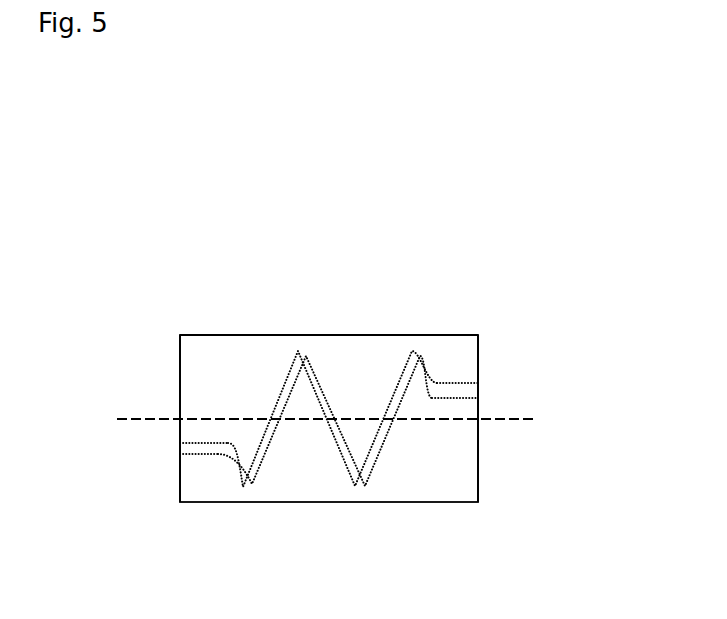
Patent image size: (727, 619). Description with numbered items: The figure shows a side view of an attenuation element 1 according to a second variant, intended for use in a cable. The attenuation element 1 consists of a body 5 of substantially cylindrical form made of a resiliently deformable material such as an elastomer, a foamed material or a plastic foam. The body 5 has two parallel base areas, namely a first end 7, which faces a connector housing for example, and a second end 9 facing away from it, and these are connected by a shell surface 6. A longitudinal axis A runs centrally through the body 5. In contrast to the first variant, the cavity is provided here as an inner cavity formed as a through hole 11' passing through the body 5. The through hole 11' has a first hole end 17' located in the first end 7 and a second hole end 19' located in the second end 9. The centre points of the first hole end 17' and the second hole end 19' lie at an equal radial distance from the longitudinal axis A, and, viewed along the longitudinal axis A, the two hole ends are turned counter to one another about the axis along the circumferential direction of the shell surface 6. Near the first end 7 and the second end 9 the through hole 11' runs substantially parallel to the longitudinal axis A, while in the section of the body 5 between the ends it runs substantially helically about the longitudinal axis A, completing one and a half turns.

The attenuation element 1 is at (56, 244).
The body 5 is at (396, 314).
The shell surface 6 is at (273, 335).
The first end 7 is at (180, 381).
The second end 9 is at (479, 362).
The longitudinal axis A is at (536, 418).
The through hole 11' is at (327, 464).
The first hole end 17' is at (137, 515).
The second hole end 19' is at (518, 365).